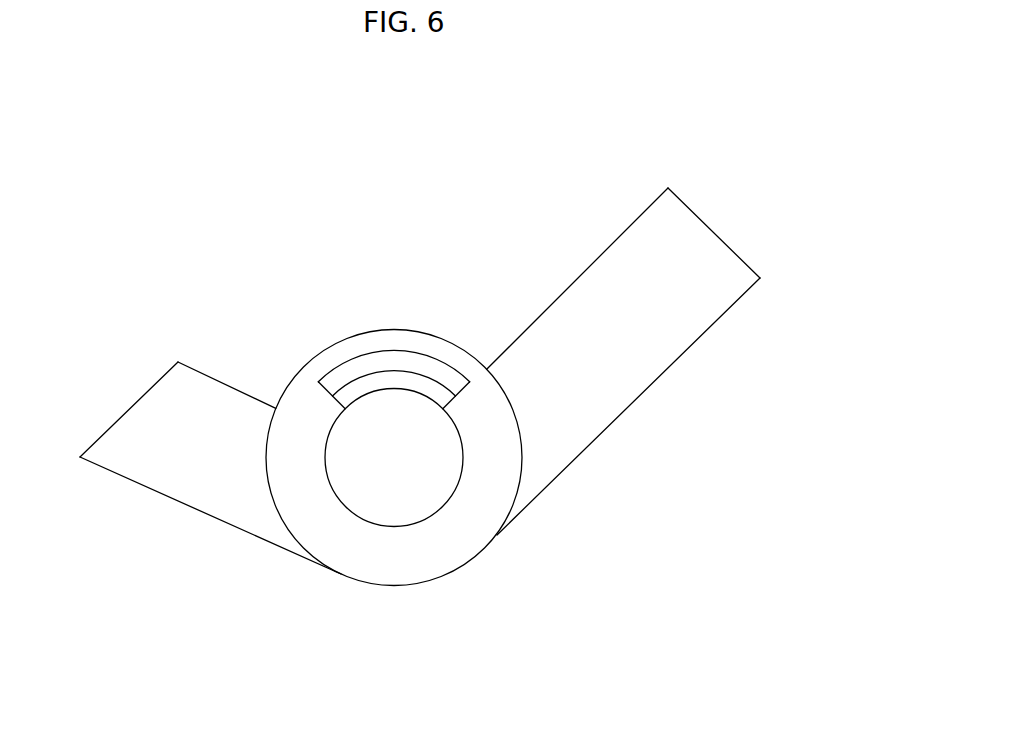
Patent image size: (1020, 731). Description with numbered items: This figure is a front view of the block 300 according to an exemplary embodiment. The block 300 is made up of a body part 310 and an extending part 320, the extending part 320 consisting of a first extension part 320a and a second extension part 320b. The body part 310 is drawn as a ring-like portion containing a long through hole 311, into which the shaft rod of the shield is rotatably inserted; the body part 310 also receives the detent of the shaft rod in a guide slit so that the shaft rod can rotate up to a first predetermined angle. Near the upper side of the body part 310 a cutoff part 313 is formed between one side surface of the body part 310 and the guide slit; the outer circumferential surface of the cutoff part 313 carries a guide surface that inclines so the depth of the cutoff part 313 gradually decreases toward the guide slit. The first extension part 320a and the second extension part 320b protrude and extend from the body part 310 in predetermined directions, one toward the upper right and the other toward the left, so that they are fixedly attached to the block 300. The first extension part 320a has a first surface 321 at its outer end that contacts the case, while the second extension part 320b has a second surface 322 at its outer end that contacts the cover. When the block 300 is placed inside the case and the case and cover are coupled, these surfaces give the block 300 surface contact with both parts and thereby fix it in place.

The block 300 is at (668, 410).
The body part 310 is at (346, 537).
The long through hole 311 is at (418, 463).
The cutoff part 313 is at (393, 365).
The extending part 320 is at (428, 374).
The first extension part 320a is at (605, 288).
The second extension part 320b is at (185, 473).
The first surface 321 is at (711, 228).
The second surface 322 is at (132, 407).